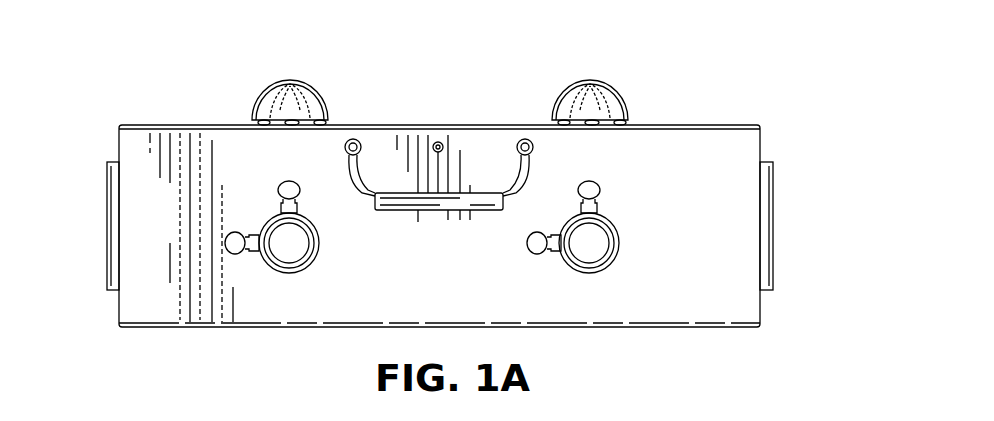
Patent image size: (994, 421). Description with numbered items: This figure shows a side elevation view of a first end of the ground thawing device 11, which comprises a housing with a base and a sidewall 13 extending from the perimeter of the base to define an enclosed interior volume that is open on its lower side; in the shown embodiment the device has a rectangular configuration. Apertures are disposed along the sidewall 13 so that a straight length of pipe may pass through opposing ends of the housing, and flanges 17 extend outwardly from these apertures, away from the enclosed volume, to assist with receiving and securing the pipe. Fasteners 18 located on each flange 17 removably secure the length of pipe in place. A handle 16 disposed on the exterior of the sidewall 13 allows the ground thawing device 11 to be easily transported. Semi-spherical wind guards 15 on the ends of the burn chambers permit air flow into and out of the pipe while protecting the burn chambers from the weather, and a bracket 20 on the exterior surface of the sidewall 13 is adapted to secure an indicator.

The ground thawing device 11 is at (752, 58).
The sidewall 13 is at (718, 139).
The semi-spherical wind guard 15 is at (596, 80).
The handle 16 is at (482, 202).
The flange 17 is at (620, 239).
The fastener 18 is at (287, 182).
The bracket 20 is at (107, 218).